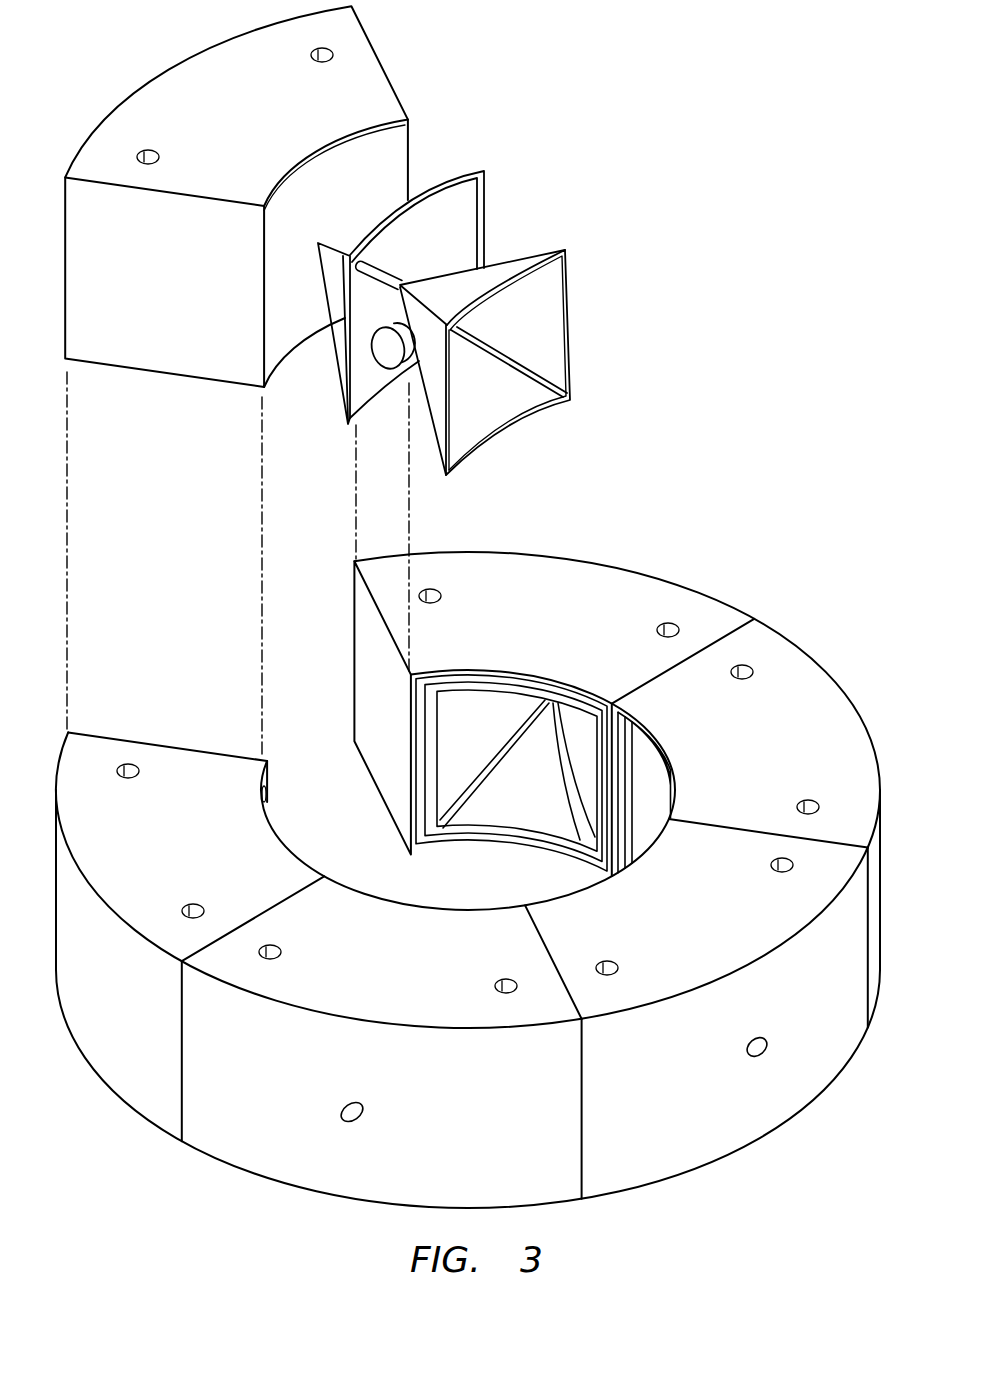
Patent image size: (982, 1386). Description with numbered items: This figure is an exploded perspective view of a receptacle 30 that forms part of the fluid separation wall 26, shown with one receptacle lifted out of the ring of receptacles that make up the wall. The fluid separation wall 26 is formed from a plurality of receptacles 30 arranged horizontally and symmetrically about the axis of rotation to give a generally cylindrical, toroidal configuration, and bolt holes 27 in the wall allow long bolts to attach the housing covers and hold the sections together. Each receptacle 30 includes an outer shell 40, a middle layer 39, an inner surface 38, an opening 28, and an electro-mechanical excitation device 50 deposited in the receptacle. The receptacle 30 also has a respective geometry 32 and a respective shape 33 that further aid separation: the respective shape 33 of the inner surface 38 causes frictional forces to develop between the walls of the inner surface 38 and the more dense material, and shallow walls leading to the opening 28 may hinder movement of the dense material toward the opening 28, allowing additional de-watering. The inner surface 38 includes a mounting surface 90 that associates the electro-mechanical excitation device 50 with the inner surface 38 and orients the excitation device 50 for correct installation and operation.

The fluid separation wall 26 is at (140, 1151).
The bolt holes 27 is at (330, 52).
The opening 28 is at (368, 251).
The receptacle 30 is at (560, 151).
The respective geometry 32 is at (497, 567).
The respective shape 33 is at (504, 444).
The inner surface 38 is at (444, 472).
The middle layer 39 is at (463, 171).
The outer shell 40 is at (203, 65).
The electro-mechanical excitation device 50 is at (384, 358).
The mounting surface 90 is at (416, 362).